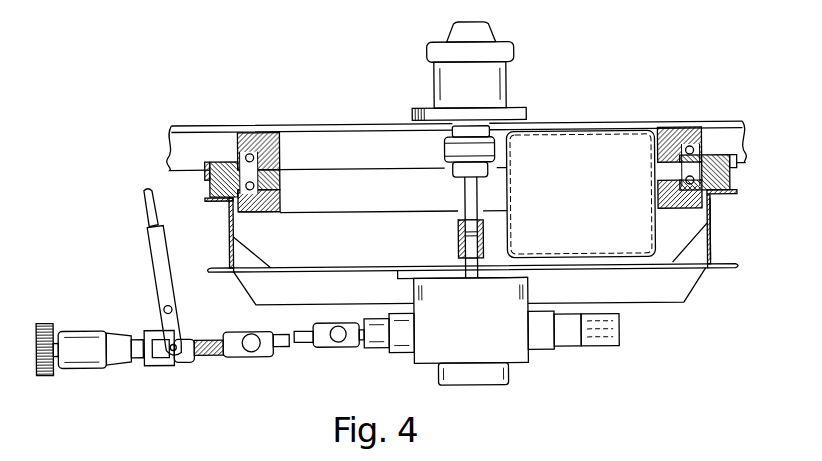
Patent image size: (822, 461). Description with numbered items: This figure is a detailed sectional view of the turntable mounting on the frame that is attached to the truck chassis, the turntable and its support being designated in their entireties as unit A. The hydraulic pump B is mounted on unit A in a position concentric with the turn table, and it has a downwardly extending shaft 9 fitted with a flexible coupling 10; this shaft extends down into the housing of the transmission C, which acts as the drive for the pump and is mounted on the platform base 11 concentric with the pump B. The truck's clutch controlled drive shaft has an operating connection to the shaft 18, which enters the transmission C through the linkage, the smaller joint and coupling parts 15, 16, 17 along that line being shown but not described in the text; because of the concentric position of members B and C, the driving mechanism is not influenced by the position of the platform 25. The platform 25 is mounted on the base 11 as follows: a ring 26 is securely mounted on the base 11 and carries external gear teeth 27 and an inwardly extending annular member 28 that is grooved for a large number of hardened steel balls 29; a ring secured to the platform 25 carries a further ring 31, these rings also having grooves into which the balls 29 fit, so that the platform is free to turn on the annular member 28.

The platform 25 is at (620, 122).
The ring 26 is at (210, 185).
The external gear teeth 27 is at (745, 165).
The inwardly extending annular member 28 is at (205, 166).
The hardened steel balls 29 is at (280, 144).
The ring 31 is at (263, 215).
The platform base 11 is at (228, 232).
The turntable and its support A is at (725, 229).
The hydraulic pump B is at (507, 90).
The flexible coupling 10 is at (497, 158).
The shaft 9 is at (478, 202).
The transmission C is at (470, 327).
The coupling block 15 is at (358, 348).
The universal joints 16 is at (235, 360).
The pin 17 is at (278, 332).
The shaft 18 is at (213, 358).